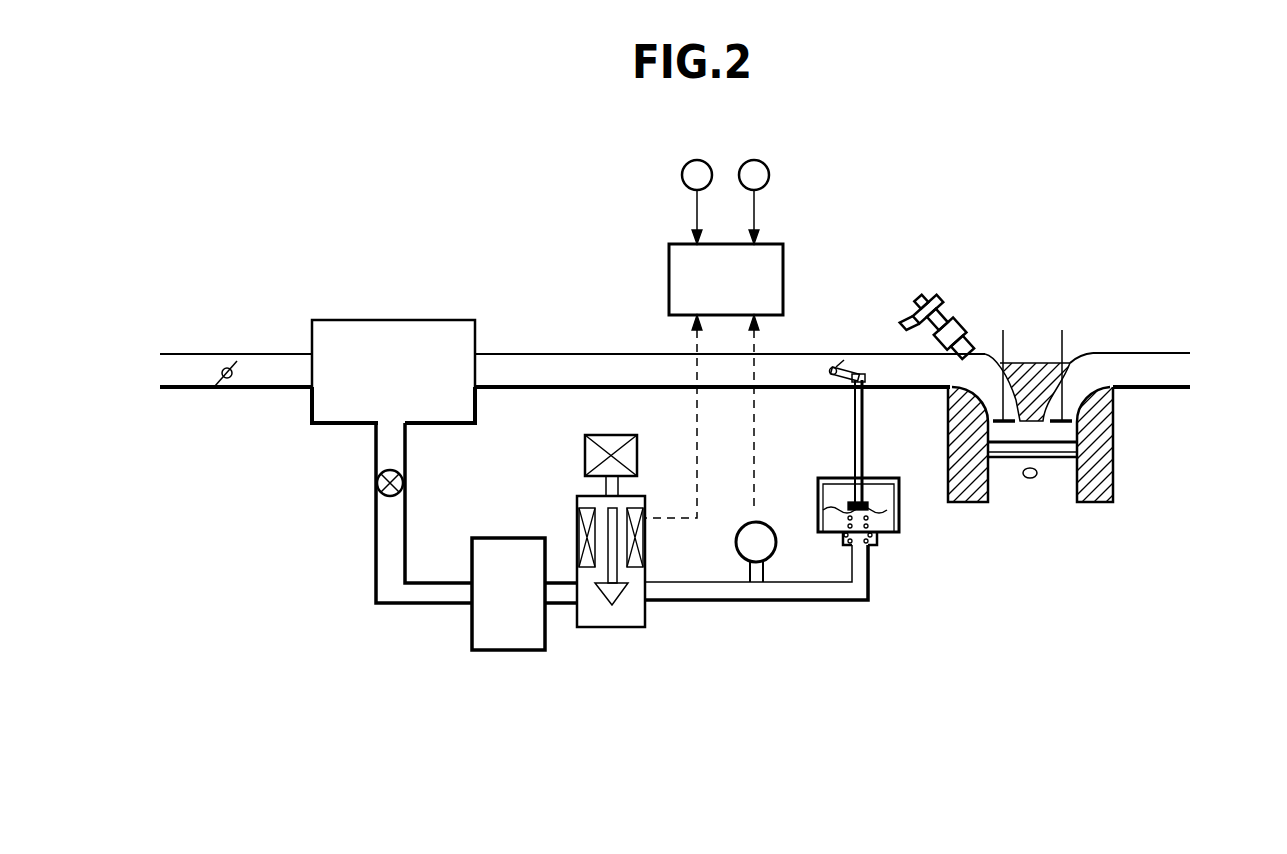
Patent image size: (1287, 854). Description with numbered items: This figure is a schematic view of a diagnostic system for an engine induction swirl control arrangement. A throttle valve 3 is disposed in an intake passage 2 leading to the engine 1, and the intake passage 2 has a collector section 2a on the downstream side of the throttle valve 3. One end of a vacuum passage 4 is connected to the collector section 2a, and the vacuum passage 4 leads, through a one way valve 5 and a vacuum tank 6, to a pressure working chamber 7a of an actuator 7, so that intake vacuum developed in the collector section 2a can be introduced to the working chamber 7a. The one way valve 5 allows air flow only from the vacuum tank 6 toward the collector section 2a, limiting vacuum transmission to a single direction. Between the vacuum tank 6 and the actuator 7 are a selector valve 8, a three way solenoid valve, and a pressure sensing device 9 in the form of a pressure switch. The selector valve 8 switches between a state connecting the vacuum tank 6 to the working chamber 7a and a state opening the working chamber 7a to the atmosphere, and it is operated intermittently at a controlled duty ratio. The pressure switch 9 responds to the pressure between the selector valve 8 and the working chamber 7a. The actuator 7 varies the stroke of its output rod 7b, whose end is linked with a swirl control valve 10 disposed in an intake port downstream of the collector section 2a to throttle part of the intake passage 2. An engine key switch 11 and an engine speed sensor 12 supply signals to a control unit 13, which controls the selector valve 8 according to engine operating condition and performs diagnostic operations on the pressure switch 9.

The engine 1 is at (1117, 450).
The intake passage 2 is at (573, 353).
The collector section 2a is at (396, 320).
The throttle valve 3 is at (229, 362).
The vacuum passage 4 is at (423, 605).
The one way valve 5 is at (404, 483).
The vacuum tank 6 is at (508, 652).
The actuator 7 is at (901, 515).
The pressure working chamber 7a is at (887, 522).
The output rod 7b is at (868, 433).
The selector valve 8 is at (612, 630).
The pressure sensing device 9 is at (738, 556).
The swirl control valve 10 is at (832, 374).
The engine key switch 11 is at (681, 173).
The engine speed sensor 12 is at (770, 175).
The control unit 13 is at (786, 283).